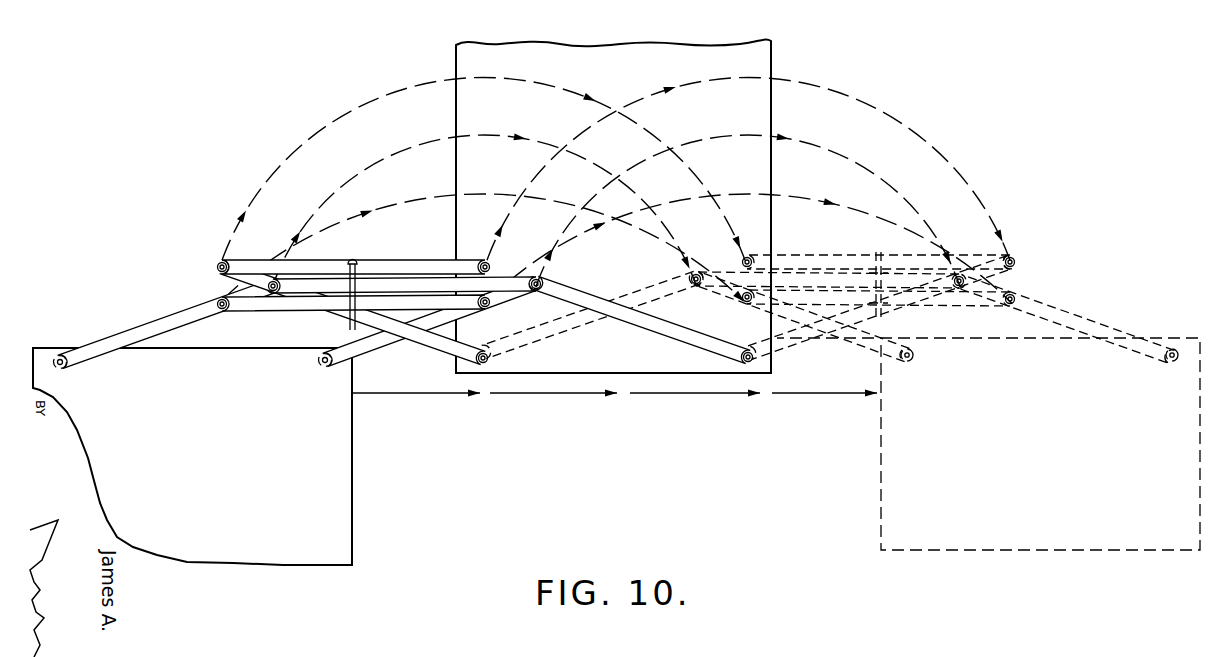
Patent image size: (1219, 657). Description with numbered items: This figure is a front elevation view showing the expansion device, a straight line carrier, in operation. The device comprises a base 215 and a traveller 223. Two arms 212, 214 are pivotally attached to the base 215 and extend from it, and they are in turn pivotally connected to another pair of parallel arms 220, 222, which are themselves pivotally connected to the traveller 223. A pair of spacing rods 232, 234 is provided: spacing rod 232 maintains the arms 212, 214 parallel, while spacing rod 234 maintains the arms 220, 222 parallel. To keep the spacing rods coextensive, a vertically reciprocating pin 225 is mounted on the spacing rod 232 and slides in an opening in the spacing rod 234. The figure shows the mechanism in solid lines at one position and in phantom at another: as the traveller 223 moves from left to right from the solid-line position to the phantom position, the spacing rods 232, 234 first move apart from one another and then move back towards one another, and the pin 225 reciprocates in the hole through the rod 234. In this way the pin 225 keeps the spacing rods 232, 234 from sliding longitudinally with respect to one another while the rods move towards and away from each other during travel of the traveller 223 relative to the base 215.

The arm 212 is at (430, 340).
The arm 214 is at (680, 331).
The base 215 is at (655, 361).
The arm 220 is at (173, 325).
The arm 222 is at (370, 345).
The traveller 223 is at (343, 522).
The vertically reciprocating pin 225 is at (348, 324).
The spacing rod 232 is at (428, 261).
The spacing rod 234 is at (400, 298).